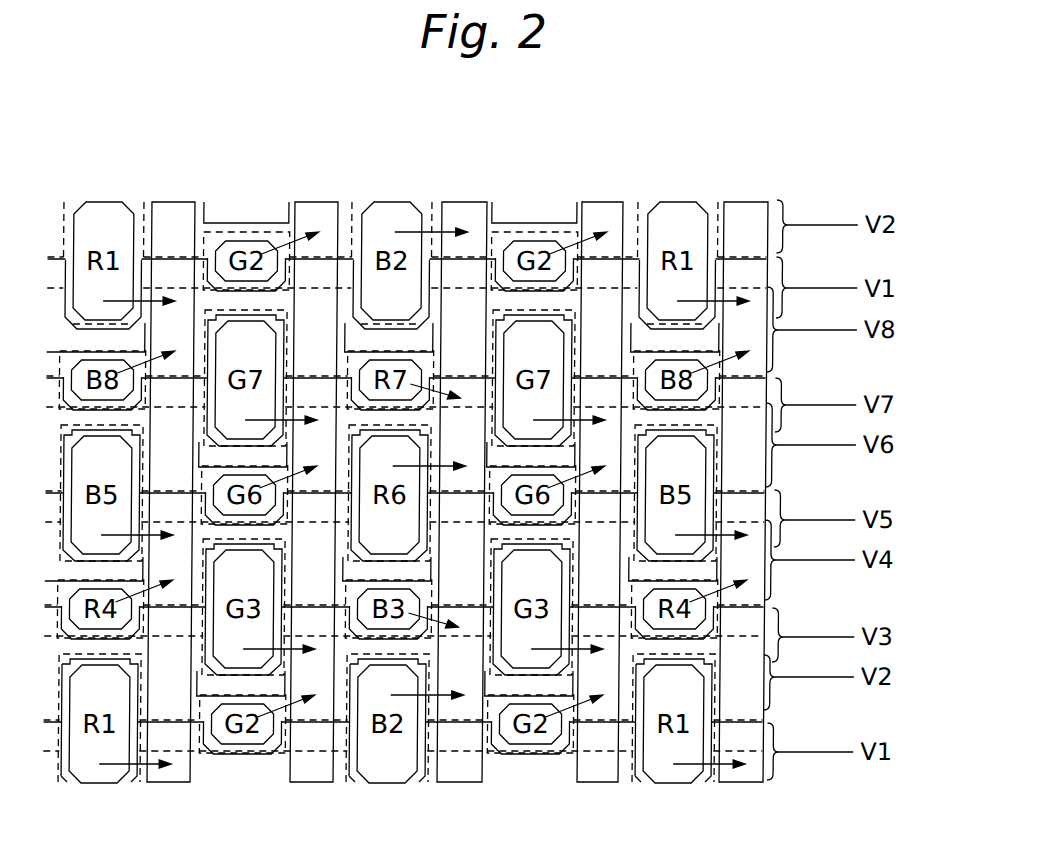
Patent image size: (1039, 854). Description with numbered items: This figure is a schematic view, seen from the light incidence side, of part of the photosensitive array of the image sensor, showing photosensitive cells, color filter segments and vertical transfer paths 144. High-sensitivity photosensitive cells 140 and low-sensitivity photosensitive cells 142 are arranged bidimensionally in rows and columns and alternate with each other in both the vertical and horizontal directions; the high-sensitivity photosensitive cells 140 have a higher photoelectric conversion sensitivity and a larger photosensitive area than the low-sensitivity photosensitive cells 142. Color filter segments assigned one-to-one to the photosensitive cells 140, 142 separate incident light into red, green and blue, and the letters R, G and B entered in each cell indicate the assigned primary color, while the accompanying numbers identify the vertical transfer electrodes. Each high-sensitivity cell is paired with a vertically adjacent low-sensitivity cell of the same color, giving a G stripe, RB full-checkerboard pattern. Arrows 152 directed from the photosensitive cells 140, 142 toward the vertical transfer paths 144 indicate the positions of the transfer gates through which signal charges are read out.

The high-sensitivity photosensitive cell 140 is at (386, 214).
The low-sensitivity photosensitive cell 142 is at (530, 228).
The vertical transfer path 144 is at (748, 212).
The arrow 152 is at (592, 226).